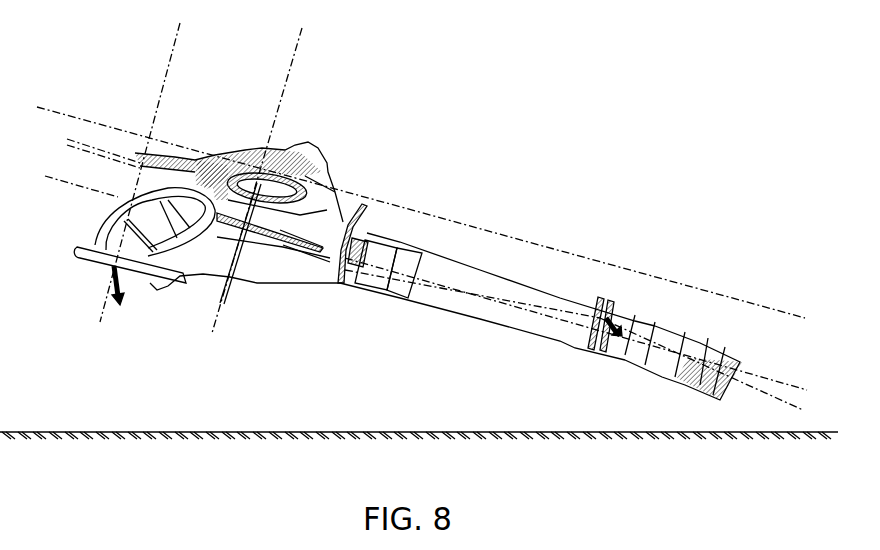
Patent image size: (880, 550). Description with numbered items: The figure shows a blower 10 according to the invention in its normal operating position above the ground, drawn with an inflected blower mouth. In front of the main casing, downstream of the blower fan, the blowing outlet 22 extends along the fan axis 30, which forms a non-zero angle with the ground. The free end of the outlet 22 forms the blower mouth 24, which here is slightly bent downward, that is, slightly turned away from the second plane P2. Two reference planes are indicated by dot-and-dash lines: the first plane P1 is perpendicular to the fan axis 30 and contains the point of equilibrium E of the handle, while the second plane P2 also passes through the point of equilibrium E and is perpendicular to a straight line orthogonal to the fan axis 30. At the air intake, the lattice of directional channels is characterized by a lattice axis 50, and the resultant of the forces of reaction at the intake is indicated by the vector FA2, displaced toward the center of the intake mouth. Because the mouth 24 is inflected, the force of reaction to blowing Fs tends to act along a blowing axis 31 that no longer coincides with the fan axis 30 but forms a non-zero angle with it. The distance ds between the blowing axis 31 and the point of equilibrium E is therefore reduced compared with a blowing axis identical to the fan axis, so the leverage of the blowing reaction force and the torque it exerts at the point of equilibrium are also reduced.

The blower 10 is at (301, 299).
The blowing outlet 22 is at (458, 303).
The blower mouth 24 is at (712, 389).
The fan axis 30 is at (574, 321).
The blowing axis 31 is at (507, 283).
The lattice axis 50 is at (100, 323).
The point of equilibrium E is at (260, 150).
The distance between the blowing axis and the point of equilibrium ds is at (357, 219).
The first plane P1 is at (213, 315).
The second plane P2 is at (639, 272).
The resultant of the forces of reaction at the air intake FA2 is at (137, 296).
The force of reaction to blowing Fs is at (640, 322).